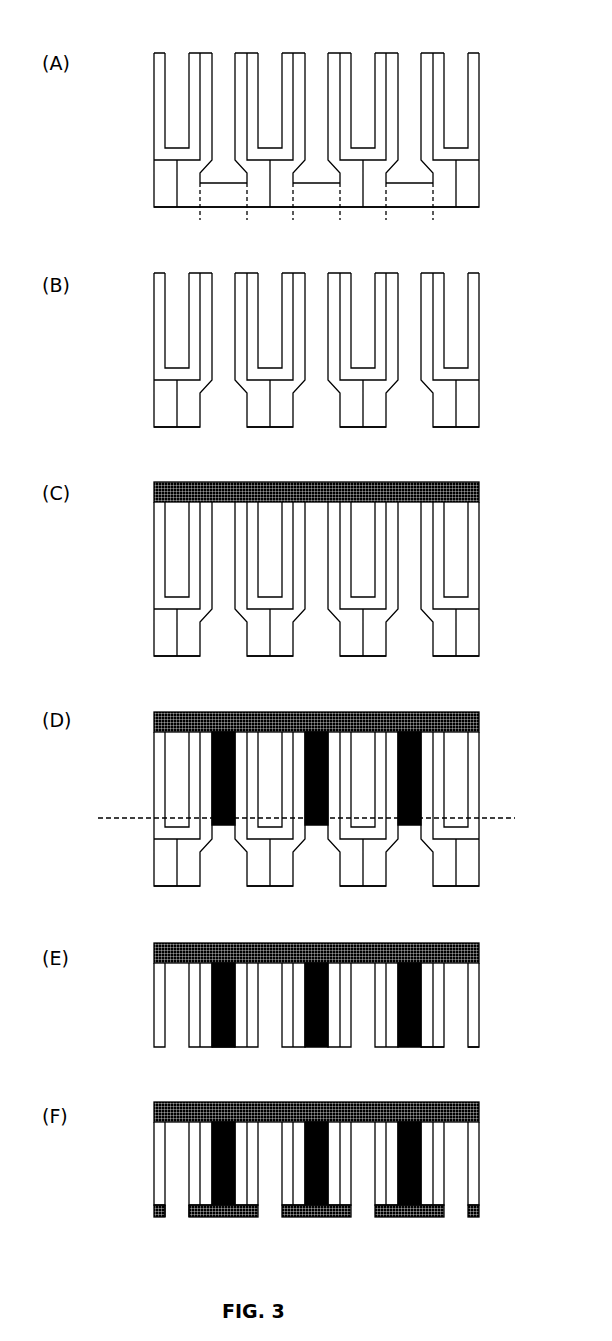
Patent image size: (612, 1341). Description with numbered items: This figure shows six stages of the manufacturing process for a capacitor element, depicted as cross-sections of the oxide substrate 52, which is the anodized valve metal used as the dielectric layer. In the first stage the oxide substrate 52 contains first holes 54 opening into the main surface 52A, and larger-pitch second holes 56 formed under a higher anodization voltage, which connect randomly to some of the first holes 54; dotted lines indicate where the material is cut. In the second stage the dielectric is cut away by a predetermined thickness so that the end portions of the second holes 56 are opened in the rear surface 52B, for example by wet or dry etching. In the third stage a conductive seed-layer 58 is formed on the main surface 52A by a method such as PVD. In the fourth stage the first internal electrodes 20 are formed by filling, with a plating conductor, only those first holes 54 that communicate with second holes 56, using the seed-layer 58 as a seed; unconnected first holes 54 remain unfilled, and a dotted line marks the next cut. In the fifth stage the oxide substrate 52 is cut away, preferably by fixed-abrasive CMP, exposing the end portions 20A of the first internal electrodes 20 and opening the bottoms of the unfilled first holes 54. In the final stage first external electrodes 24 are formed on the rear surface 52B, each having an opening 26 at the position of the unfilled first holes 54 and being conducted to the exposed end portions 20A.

The oxide substrate 52 is at (479, 115).
The main surface 52A is at (428, 52).
The rear surface 52B is at (445, 207).
The first holes 54 is at (365, 72).
The second holes 56 is at (410, 178).
The conductive seed-layer 58 is at (479, 490).
The first internal electrodes 20 is at (221, 788).
The end portions of the first internal electrodes 20A is at (222, 1048).
The first external electrodes 24 is at (217, 1218).
The opening 26 is at (173, 1215).